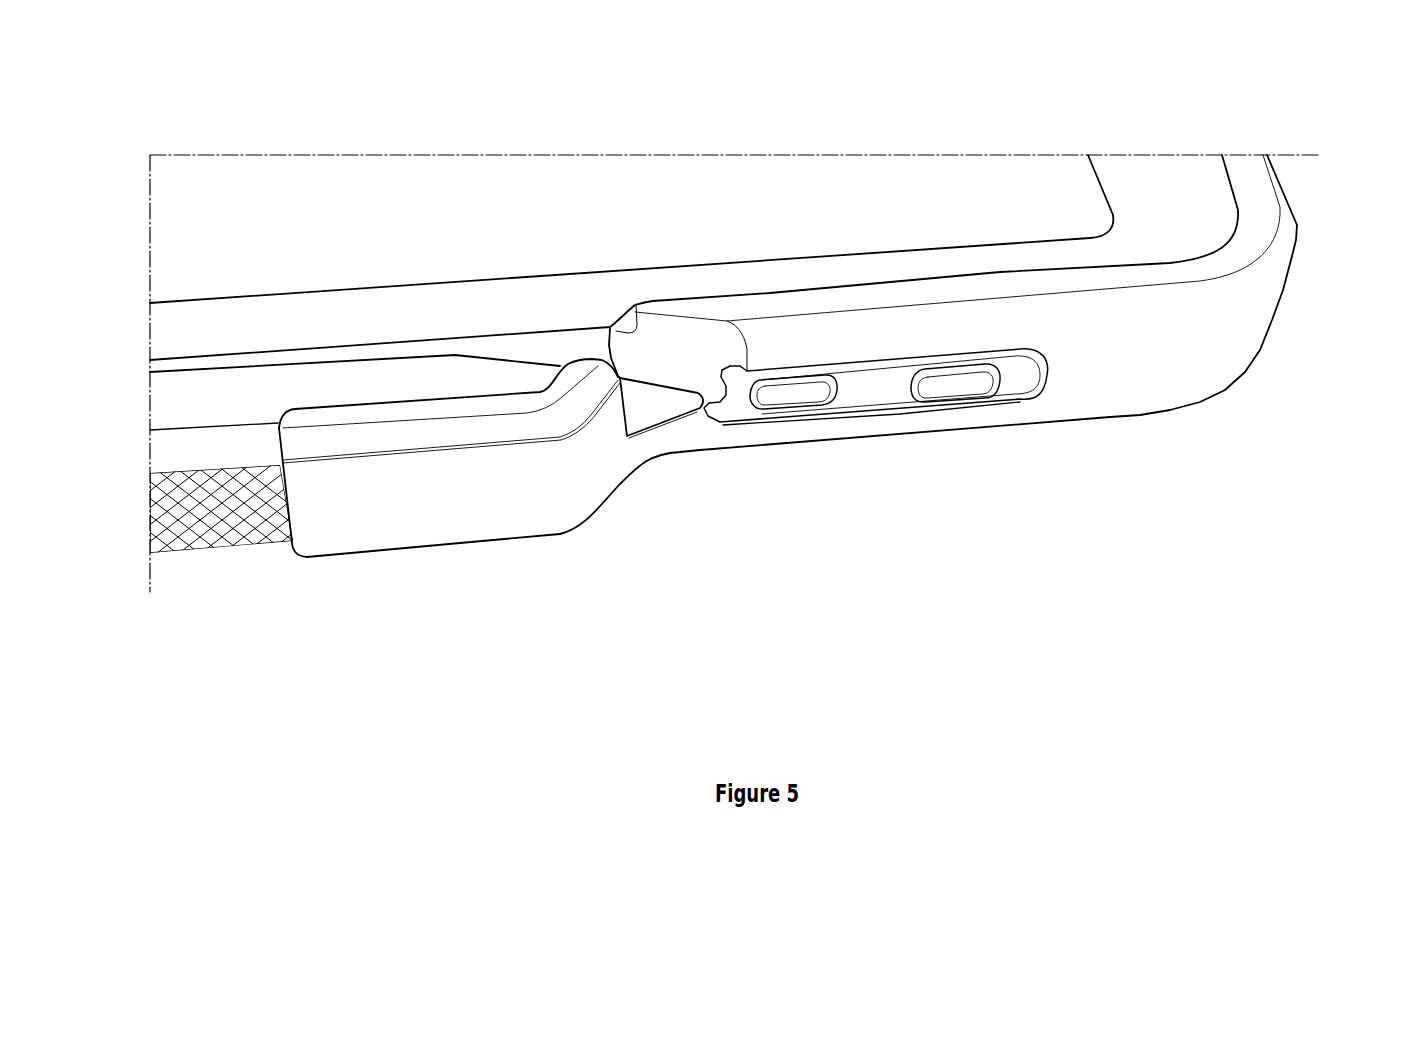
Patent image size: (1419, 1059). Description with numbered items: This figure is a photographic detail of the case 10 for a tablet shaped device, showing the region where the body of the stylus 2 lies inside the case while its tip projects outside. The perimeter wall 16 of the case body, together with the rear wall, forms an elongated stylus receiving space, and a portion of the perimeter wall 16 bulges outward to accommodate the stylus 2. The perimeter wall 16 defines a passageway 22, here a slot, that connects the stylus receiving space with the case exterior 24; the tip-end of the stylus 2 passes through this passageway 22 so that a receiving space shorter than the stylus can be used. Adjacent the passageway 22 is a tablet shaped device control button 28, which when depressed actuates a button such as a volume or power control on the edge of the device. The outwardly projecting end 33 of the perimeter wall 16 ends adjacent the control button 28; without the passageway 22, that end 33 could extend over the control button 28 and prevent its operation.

The stylus 2 is at (178, 408).
The case 10 is at (1330, 258).
The perimeter wall 16 is at (325, 530).
The passageway 22 is at (658, 442).
The case exterior 24 is at (1000, 558).
The tablet shaped device control button 28 is at (807, 395).
The outwardly projecting end 33 is at (583, 510).